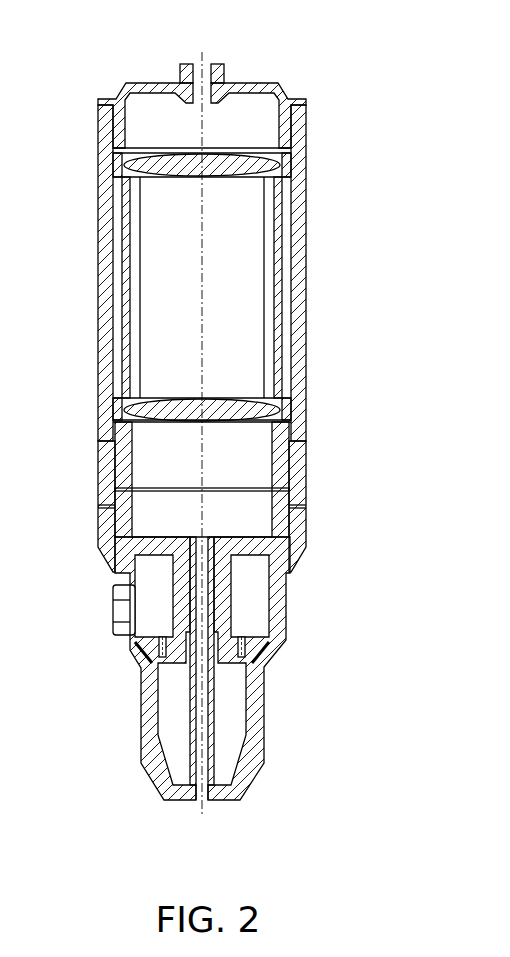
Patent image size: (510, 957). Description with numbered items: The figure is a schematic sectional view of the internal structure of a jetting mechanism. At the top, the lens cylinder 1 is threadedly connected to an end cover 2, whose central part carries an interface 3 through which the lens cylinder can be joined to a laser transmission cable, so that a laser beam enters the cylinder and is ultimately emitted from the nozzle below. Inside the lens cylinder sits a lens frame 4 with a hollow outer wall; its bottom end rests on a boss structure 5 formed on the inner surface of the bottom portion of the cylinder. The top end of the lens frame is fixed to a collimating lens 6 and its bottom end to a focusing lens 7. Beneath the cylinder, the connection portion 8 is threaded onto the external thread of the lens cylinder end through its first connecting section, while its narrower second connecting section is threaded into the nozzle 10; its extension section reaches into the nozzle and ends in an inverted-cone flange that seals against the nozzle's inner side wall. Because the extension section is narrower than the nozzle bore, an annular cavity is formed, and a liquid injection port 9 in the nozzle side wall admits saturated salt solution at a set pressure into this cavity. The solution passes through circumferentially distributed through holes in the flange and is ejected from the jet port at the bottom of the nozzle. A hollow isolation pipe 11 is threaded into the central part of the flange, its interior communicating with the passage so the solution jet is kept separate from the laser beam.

The lens cylinder 1 is at (308, 177).
The end cover 2 is at (294, 92).
The interface 3 is at (207, 63).
The lens frame 4 is at (292, 395).
The boss structure 5 is at (282, 440).
The collimating lens 6 is at (160, 171).
The focusing lens 7 is at (138, 419).
The connection portion 8 is at (298, 490).
The liquid injection port 9 is at (122, 612).
The nozzle 10 is at (283, 630).
The hollow isolation pipe 11 is at (212, 783).